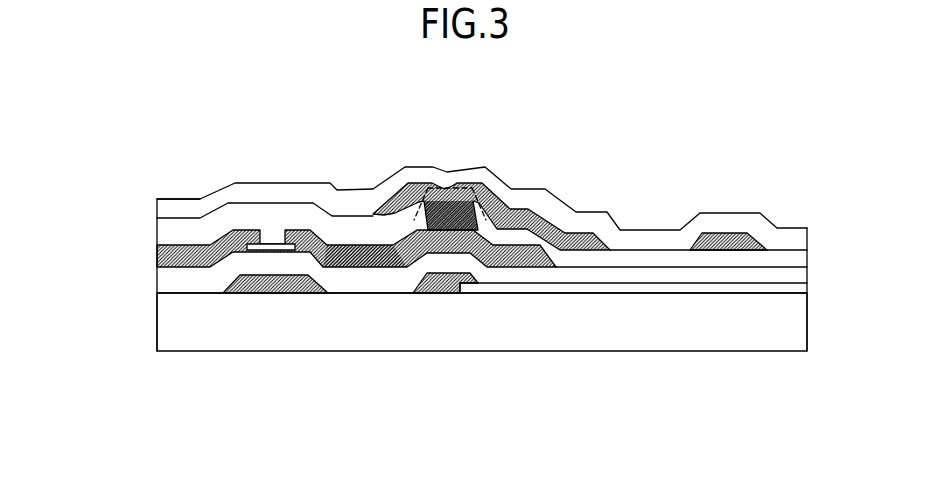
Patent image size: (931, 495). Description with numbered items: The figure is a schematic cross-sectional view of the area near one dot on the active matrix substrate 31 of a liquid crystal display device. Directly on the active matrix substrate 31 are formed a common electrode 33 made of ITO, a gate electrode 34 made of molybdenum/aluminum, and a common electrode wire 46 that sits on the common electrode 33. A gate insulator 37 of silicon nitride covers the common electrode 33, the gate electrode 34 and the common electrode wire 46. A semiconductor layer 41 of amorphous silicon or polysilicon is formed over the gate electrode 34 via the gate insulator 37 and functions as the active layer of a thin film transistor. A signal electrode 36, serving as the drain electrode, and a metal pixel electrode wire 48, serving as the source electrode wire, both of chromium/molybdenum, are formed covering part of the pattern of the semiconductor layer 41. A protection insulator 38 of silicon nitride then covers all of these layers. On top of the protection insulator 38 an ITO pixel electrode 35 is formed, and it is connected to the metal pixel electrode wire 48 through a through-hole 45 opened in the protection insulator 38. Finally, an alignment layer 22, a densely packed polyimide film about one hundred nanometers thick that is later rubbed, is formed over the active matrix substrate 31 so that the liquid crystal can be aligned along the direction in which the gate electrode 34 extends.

The alignment layer 22 is at (278, 188).
The active matrix substrate 31 is at (637, 332).
The common electrode 33 is at (748, 284).
The gate electrode 34 is at (265, 285).
The pixel electrode 35 is at (723, 240).
The signal electrode 36 is at (190, 255).
The gate insulator 37 is at (192, 272).
The protection insulator 38 is at (203, 225).
The semiconductor layer 41 is at (278, 247).
The through-hole 45 is at (474, 190).
The common electrode wire 46 is at (437, 288).
The pixel electrode wire 48 is at (368, 257).